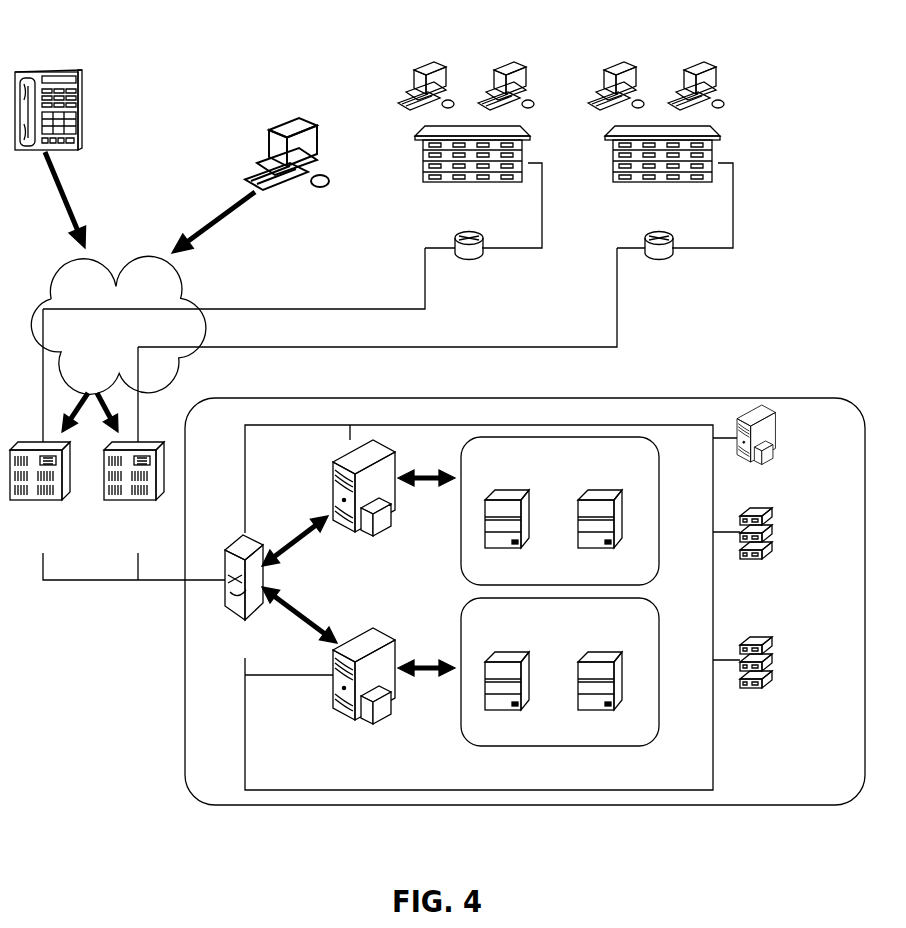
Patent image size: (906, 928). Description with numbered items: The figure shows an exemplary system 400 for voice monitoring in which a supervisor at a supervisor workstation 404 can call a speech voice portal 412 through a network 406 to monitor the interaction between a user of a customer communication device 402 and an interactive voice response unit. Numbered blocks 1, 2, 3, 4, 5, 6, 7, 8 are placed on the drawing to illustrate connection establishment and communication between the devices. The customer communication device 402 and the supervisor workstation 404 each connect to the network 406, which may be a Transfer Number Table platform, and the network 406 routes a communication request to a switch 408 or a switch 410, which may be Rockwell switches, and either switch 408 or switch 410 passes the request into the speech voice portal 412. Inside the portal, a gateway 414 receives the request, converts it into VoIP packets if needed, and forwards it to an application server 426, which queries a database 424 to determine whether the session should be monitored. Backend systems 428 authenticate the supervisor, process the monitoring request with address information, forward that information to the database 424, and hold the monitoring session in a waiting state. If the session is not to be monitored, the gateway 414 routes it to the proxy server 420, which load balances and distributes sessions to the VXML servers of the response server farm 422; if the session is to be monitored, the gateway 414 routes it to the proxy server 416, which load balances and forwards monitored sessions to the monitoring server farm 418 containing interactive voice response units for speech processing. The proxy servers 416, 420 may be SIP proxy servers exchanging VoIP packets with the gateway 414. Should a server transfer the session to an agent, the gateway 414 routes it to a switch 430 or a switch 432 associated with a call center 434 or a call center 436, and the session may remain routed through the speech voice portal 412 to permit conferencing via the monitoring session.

The system for voice monitoring 400 is at (34, 47).
The customer communication device 402 is at (80, 86).
The supervisor workstation 404 is at (282, 134).
The network 406 is at (118, 325).
The switch 408 is at (39, 495).
The switch 410 is at (133, 495).
The speech voice portal 412 is at (815, 398).
The gateway 414 is at (242, 593).
The proxy server 416 is at (366, 703).
The monitoring server farm 418 is at (560, 672).
The proxy server 420 is at (366, 519).
The response server farm 422 is at (560, 511).
The database 424 is at (766, 456).
The application server 426 is at (768, 573).
The backend systems 428 is at (768, 695).
The switch 430 is at (470, 270).
The switch 432 is at (660, 270).
The call center 434 is at (466, 145).
The call center 436 is at (656, 145).
The block 1 is at (213, 220).
The block 2 is at (73, 200).
The block 3 is at (268, 712).
The block 4 is at (293, 515).
The block 5 is at (683, 462).
The block 6 is at (299, 621).
The block 7 is at (683, 632).
The block 8 is at (568, 206).